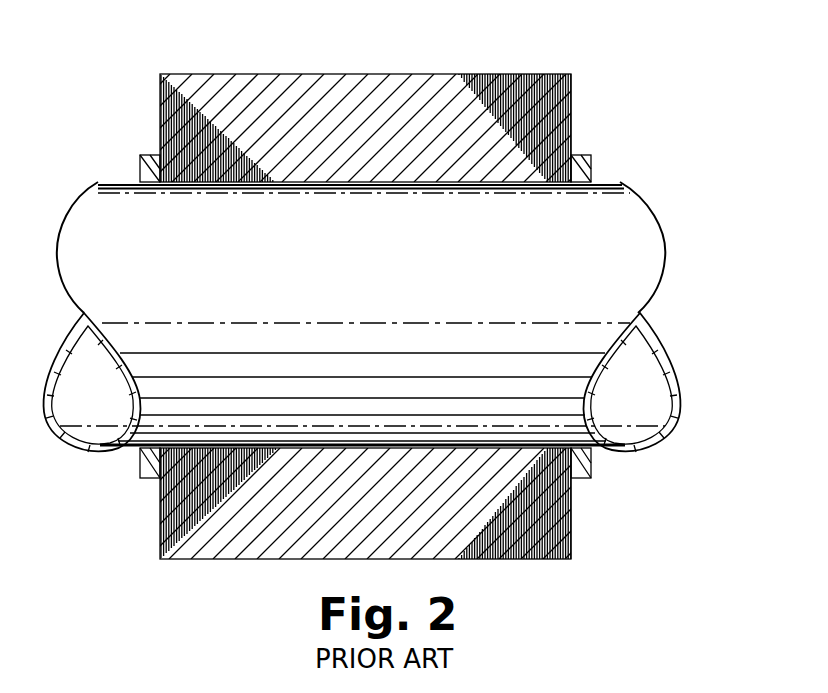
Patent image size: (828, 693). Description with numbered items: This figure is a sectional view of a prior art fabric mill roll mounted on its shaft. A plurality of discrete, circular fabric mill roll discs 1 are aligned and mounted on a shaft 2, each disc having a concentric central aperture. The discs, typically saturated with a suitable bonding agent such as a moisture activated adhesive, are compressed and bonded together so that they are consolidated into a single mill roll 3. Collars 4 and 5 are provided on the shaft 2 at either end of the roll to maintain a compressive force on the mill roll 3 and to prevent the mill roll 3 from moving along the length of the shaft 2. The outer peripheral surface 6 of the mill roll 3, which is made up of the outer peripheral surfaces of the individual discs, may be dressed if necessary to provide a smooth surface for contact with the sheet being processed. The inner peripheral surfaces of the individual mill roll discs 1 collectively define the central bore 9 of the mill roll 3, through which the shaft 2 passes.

The mill roll discs 1 is at (546, 74).
The shaft 2 is at (617, 250).
The mill roll 3 is at (622, 55).
The collar 4 is at (588, 160).
The collar 5 is at (140, 157).
The outer peripheral surface 6 is at (262, 74).
The central bore 9 is at (359, 183).